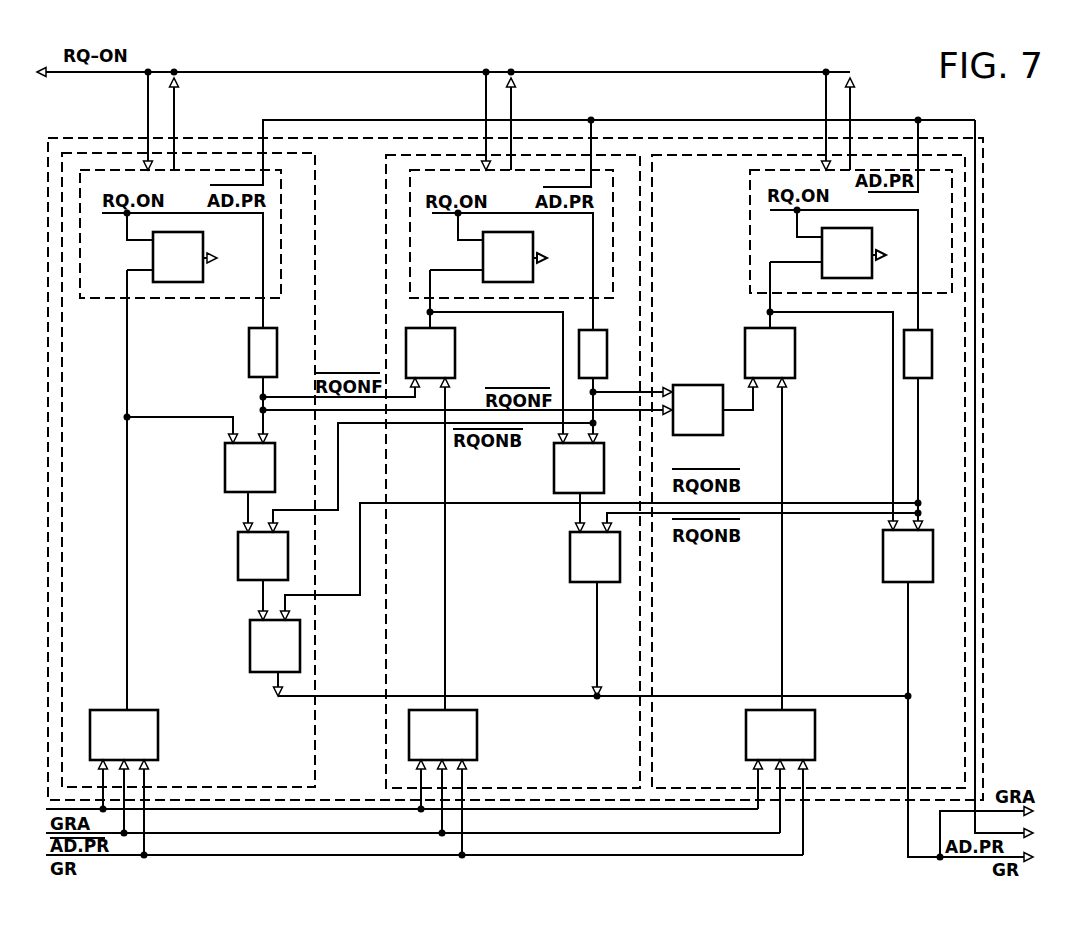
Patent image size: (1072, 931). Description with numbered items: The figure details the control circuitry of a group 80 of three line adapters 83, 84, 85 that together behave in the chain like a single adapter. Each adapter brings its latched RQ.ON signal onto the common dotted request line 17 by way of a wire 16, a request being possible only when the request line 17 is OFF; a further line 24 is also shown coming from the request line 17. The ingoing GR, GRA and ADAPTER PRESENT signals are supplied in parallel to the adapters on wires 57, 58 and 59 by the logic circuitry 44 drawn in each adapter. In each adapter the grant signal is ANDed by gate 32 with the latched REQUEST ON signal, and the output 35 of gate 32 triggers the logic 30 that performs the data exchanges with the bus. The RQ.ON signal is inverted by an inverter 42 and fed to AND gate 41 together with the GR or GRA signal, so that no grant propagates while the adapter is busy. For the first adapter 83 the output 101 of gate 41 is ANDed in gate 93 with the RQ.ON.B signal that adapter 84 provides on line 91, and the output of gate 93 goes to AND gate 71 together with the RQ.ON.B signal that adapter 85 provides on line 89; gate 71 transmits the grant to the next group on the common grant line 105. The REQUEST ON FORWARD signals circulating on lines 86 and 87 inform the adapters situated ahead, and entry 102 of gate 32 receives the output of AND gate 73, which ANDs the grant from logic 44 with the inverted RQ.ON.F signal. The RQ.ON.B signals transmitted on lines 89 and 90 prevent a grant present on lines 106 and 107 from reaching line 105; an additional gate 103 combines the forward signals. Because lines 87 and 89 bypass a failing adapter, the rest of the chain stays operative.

The request line 17 is at (293, 73).
The request line 24 is at (148, 120).
The wire 16 is at (173, 130).
The group 80 is at (247, 133).
The wire 58 is at (957, 122).
The first adapter 83 is at (315, 200).
The adapter 84 is at (383, 280).
The adapter 85 is at (973, 467).
The logic 30 is at (282, 268).
The AND gate 32 is at (207, 240).
The output 35 is at (208, 262).
The inverter 42 is at (276, 345).
The control line 86 is at (270, 398).
The control line 87 is at (275, 413).
The AND gate 41 is at (225, 468).
The line 91 is at (340, 476).
The output 101 is at (247, 500).
The AND gate 93 is at (237, 560).
The line 106 is at (260, 598).
The AND gate 71 is at (250, 648).
The line 89 is at (815, 503).
The line 90 is at (868, 513).
The grant line 105 is at (463, 697).
The logic circuitry 44 is at (112, 710).
The wire 57 is at (327, 813).
The wire 59 is at (273, 857).
The entry 102 is at (463, 265).
The AND gate 73 is at (455, 354).
The AND gate 103 is at (705, 382).
The line 107 is at (576, 510).